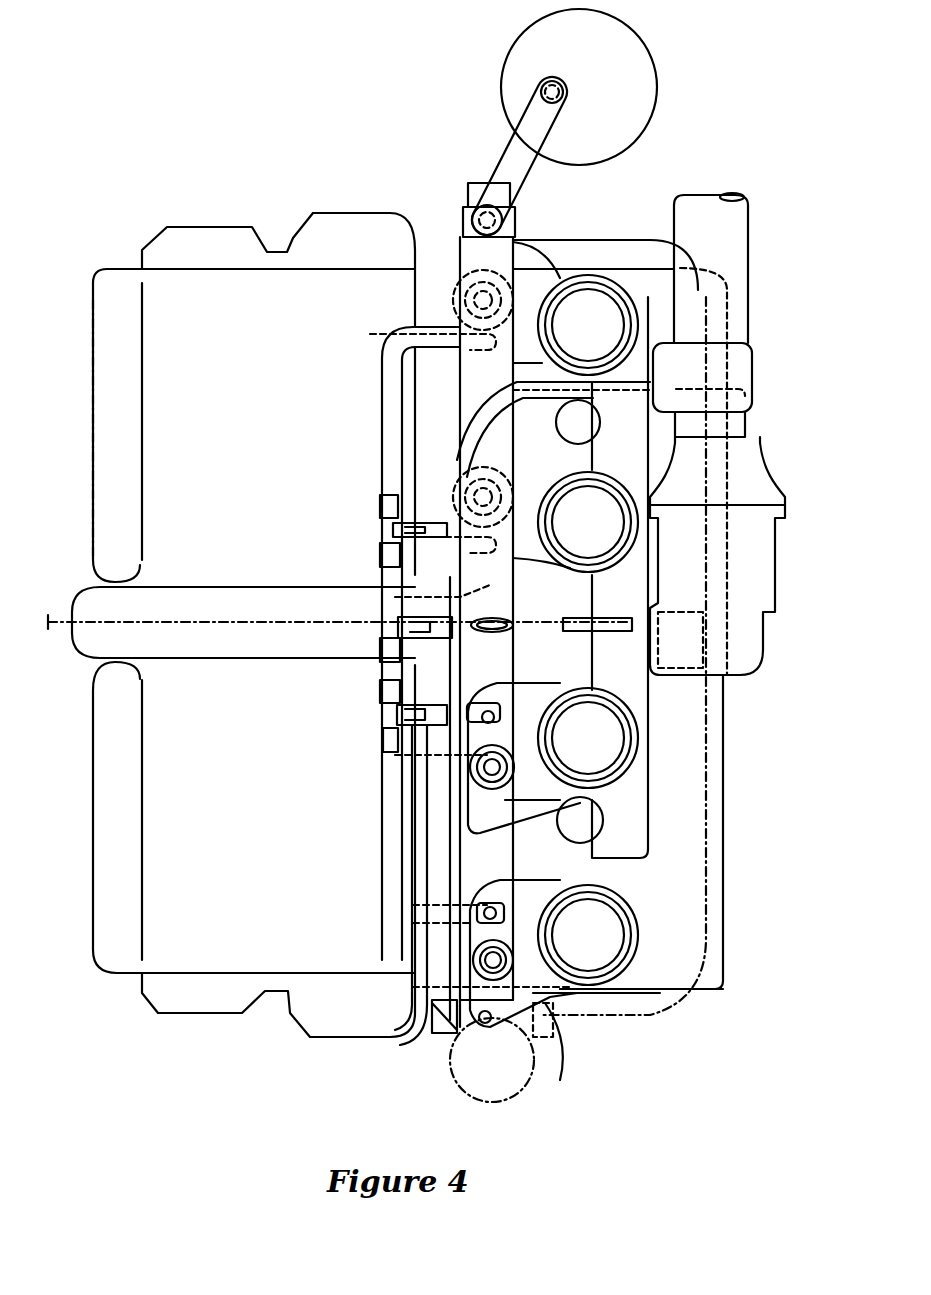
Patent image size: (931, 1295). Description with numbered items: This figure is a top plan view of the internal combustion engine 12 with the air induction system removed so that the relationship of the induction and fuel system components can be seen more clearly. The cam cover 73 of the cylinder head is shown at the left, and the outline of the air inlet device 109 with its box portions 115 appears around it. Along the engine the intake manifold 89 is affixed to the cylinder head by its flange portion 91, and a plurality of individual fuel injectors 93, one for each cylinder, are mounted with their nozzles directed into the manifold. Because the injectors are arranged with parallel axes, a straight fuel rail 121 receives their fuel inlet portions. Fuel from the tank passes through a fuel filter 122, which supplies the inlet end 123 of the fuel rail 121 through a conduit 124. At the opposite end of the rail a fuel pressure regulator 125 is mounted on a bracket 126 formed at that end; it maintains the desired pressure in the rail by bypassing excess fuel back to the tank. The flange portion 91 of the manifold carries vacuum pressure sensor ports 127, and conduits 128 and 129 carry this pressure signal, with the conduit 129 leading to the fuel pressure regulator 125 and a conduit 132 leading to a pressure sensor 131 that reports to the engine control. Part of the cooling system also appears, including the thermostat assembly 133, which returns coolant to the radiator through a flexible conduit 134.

The internal combustion engine 12 is at (290, 213).
The cam cover 73 is at (190, 238).
The intake manifold 89 is at (640, 335).
The flange portion 91 is at (545, 255).
The fuel injector 93 is at (455, 278).
The air inlet device 109 is at (122, 258).
The box portion 115 is at (93, 330).
The fuel rail 121 is at (456, 388).
The fuel filter 122 is at (502, 95).
The inlet end 123 is at (455, 210).
The conduit 124 is at (490, 163).
The fuel pressure regulator 125 is at (535, 1080).
The bracket 126 is at (555, 1008).
The vacuum pressure sensor port 127 is at (370, 334).
The conduit 128 is at (380, 530).
The conduit 129 is at (380, 350).
The pressure sensor 131 is at (745, 345).
The conduit 132 is at (460, 452).
The thermostat assembly 133 is at (785, 550).
The flexible conduit 134 is at (750, 280).